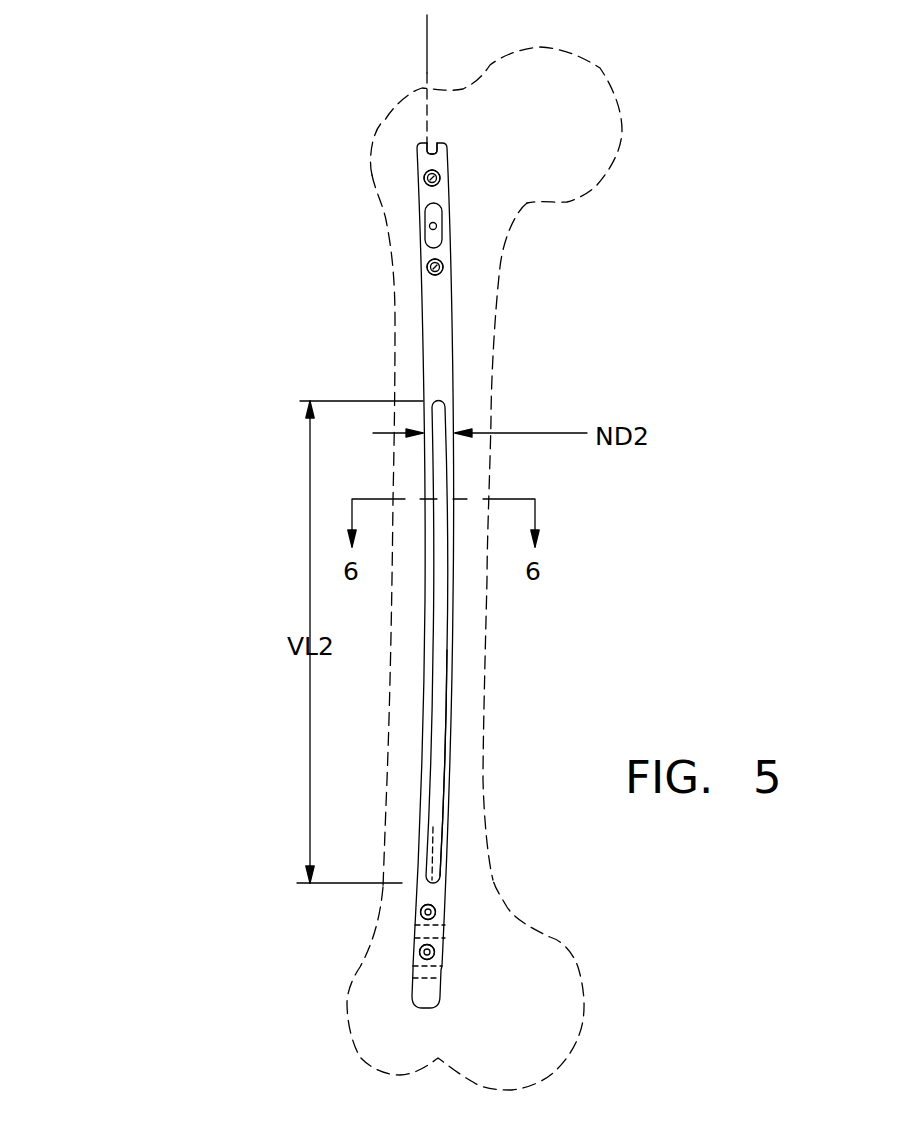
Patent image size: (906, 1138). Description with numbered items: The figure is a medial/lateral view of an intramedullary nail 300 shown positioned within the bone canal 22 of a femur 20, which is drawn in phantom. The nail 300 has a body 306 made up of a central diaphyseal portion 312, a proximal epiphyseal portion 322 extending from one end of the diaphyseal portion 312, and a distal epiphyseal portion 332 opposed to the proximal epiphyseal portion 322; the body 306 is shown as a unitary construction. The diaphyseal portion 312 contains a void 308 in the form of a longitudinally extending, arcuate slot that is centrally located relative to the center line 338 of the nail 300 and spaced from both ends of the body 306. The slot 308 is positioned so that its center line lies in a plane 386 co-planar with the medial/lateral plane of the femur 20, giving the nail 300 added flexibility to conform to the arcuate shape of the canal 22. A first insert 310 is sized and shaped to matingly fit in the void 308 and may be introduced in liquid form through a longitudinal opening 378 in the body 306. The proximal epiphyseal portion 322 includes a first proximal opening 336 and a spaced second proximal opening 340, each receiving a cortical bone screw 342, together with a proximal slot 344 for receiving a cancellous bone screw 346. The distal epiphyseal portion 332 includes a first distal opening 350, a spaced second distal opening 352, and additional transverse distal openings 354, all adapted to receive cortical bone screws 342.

The intramedullary nail 300 is at (394, 539).
The proximal epiphyseal portion 322 is at (283, 300).
The distal epiphyseal portion 332 is at (222, 1000).
The diaphyseal portion 312 is at (658, 502).
The femur 20 is at (490, 472).
The bone canal 22 is at (470, 652).
The center line 338 is at (428, 38).
The body 306 is at (455, 668).
The longitudinal opening 378 is at (422, 142).
The void 308 is at (435, 745).
The first insert 310 is at (442, 797).
The plane 386 is at (432, 859).
The first proximal opening 336 is at (452, 178).
The proximal slot 344 is at (452, 218).
The cancellous bone screw 346 is at (436, 227).
The second proximal opening 340 is at (452, 266).
The cortical bone screw 342 is at (428, 267).
The second distal opening 352 is at (449, 914).
The first distal opening 350 is at (449, 955).
The additional transverse distal openings 354 is at (453, 936).